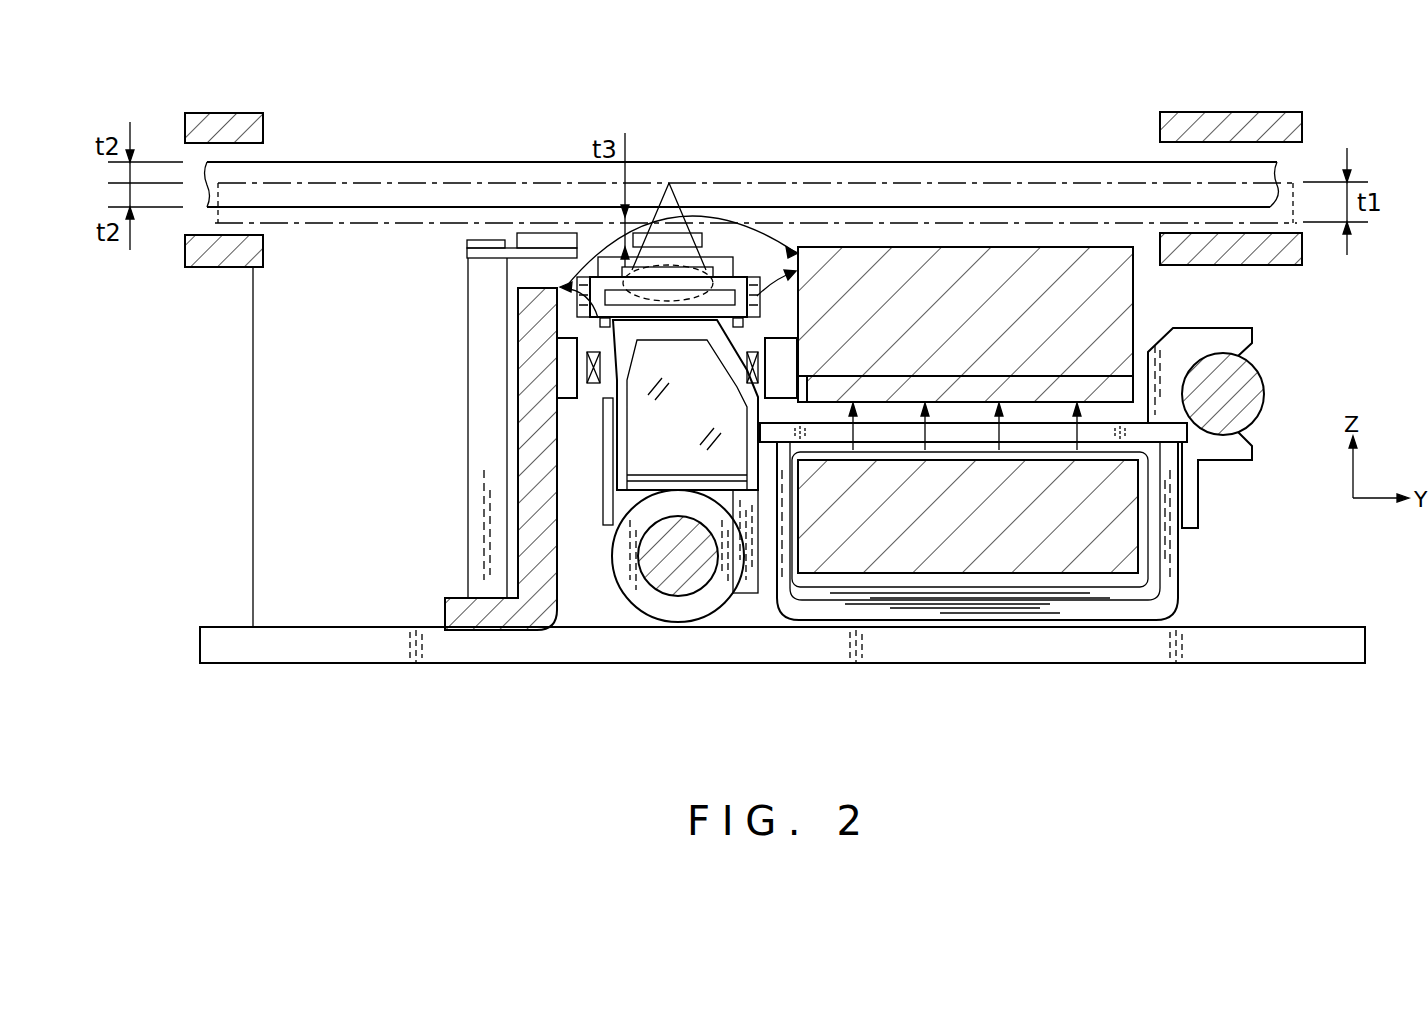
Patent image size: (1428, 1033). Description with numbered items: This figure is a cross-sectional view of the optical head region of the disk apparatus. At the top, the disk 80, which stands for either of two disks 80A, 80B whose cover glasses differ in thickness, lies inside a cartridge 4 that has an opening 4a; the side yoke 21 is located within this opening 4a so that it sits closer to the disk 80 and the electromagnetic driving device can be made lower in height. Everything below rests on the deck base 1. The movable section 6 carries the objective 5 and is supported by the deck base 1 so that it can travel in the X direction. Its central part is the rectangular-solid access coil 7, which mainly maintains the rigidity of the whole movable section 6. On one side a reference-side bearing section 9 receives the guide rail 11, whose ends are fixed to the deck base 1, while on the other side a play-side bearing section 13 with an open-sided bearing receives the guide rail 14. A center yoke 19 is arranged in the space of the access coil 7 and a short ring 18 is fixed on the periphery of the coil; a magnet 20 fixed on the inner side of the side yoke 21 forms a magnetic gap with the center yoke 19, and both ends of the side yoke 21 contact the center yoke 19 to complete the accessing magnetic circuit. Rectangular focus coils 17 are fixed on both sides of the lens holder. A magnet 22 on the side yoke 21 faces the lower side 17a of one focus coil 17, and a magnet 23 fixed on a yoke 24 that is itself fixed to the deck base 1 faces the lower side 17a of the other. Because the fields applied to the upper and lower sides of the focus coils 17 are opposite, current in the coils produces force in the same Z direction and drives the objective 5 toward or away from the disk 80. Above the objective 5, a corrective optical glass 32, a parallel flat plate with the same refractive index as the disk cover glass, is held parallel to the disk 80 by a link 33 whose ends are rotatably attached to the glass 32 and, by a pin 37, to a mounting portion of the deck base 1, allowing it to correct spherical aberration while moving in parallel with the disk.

The deck base 1 is at (1247, 647).
The cartridge 4 is at (1205, 115).
The opening 4a is at (1143, 247).
The objective 5 is at (752, 303).
The movable section 6 is at (748, 614).
The access coil 7 is at (1055, 617).
The reference-side bearing section 9 is at (683, 613).
The guide rail 11 is at (653, 577).
The play-side bearing section 13 is at (1212, 348).
The guide rail 14 is at (1252, 395).
The focus coil 17 is at (583, 278).
The lower side of focus coil 17a is at (595, 385).
The short ring 18 is at (817, 583).
The center yoke 19 is at (923, 558).
The magnet 20 is at (1042, 385).
The side yoke 21 is at (932, 255).
The magnet 22 is at (800, 348).
The magnet 23 is at (557, 340).
The yoke 24 is at (527, 395).
The corrective optical glass 32 is at (570, 233).
The link 33 is at (467, 245).
The pin 37 is at (465, 243).
The disk 80 is at (352, 75).
The disk 80A is at (280, 160).
The disk 80B is at (353, 183).